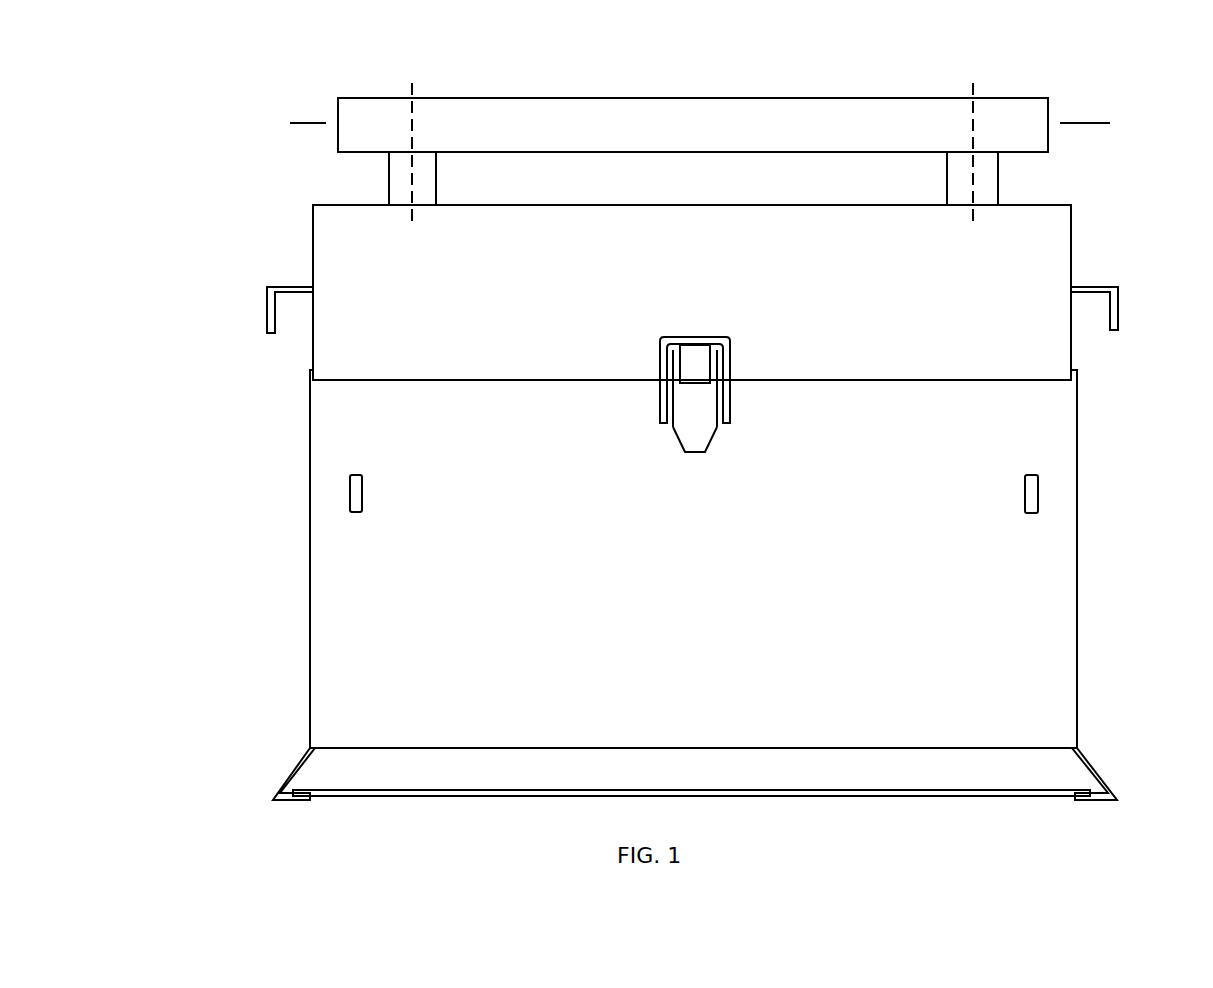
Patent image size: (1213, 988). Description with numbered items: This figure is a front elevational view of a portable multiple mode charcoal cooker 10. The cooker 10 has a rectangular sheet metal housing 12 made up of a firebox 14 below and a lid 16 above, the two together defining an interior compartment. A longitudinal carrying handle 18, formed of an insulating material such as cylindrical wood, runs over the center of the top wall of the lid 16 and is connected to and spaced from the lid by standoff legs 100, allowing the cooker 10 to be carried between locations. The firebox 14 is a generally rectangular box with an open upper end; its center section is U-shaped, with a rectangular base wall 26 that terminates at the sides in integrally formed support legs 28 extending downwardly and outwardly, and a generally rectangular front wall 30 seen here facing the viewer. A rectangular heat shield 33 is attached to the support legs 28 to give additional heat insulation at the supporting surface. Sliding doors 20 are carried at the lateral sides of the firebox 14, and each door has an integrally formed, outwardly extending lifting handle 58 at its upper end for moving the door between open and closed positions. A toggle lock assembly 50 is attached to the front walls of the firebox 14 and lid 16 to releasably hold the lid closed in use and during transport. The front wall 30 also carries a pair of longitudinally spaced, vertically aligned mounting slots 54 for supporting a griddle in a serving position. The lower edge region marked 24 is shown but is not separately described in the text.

The multiple mode charcoal cooker 10 is at (1134, 403).
The housing 12 is at (298, 384).
The firebox 14 is at (309, 462).
The lid 16 is at (313, 228).
The carrying handle 18 is at (512, 108).
The sliding doors 20 is at (270, 287).
The bottom edge 24 is at (591, 735).
The base wall 26 is at (850, 762).
The support legs 28 is at (296, 768).
The front wall 30 is at (698, 548).
The heat shield 33 is at (691, 813).
The toggle lock assembly 50 is at (652, 350).
The mounting slots 54 is at (355, 493).
The lifting handles 58 is at (272, 313).
The standoff legs 100 is at (425, 174).